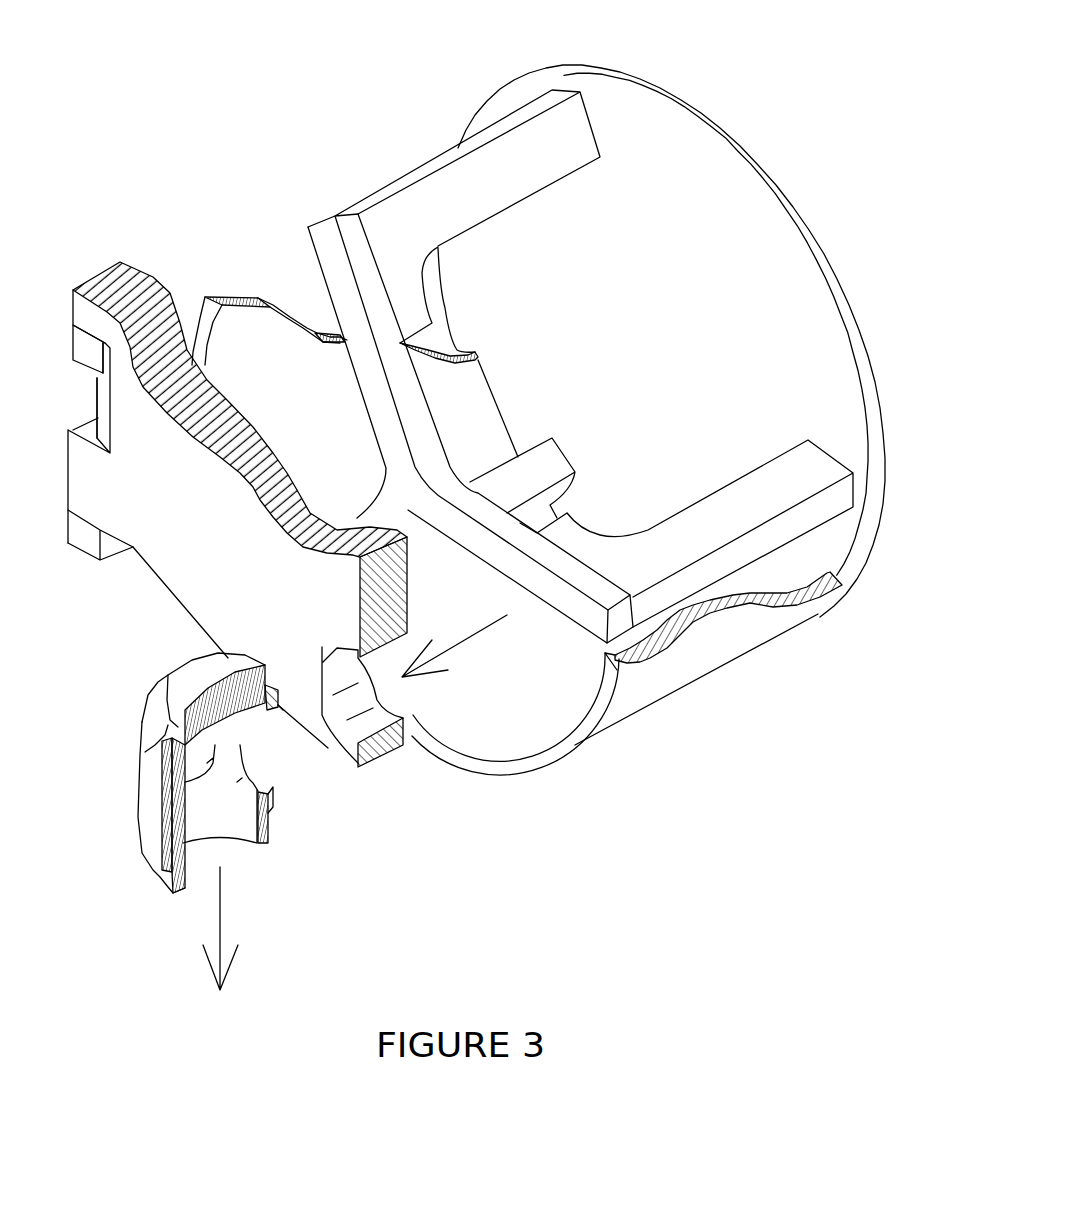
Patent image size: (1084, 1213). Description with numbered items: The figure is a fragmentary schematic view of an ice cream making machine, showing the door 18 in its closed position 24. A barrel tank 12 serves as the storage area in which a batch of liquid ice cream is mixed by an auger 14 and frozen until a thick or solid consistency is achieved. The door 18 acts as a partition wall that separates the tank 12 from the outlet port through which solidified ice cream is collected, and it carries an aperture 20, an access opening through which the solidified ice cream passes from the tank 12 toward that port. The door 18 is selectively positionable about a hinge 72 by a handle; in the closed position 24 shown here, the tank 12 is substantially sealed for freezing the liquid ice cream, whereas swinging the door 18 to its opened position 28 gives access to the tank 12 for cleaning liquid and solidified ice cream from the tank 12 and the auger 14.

The barrel tank 12 is at (624, 159).
The auger 14 is at (433, 152).
The door 18 is at (150, 565).
The aperture 20 is at (347, 702).
The closed position 24 is at (388, 818).
The opened position 28 is at (110, 903).
The hinge 72 is at (93, 405).